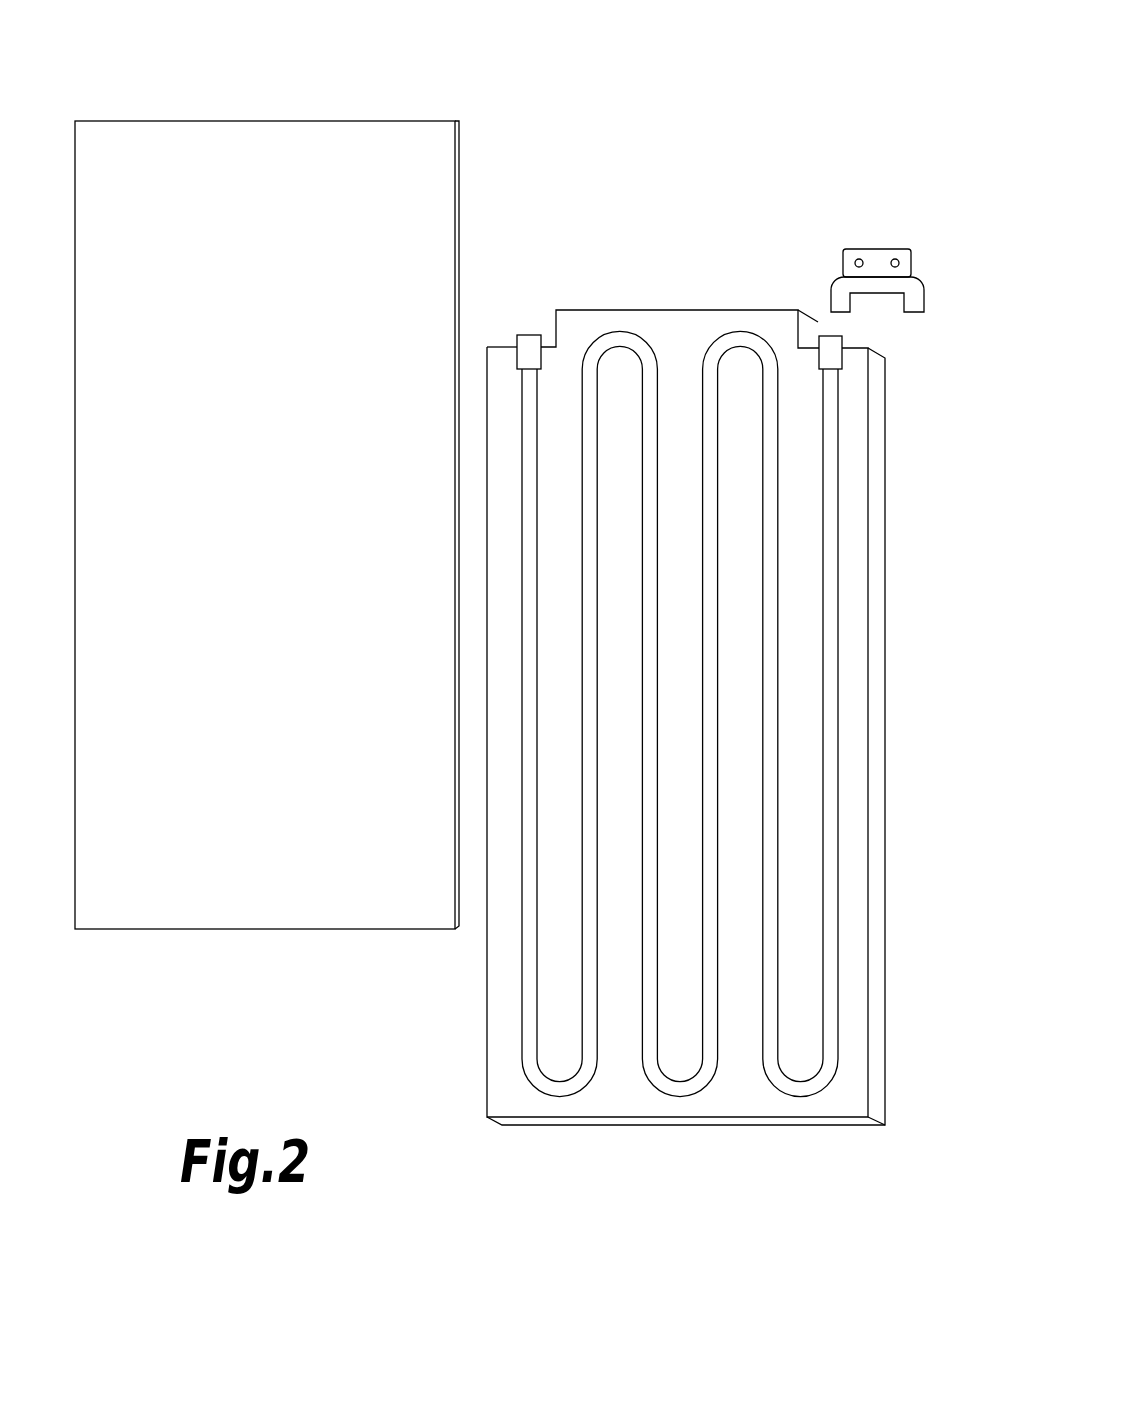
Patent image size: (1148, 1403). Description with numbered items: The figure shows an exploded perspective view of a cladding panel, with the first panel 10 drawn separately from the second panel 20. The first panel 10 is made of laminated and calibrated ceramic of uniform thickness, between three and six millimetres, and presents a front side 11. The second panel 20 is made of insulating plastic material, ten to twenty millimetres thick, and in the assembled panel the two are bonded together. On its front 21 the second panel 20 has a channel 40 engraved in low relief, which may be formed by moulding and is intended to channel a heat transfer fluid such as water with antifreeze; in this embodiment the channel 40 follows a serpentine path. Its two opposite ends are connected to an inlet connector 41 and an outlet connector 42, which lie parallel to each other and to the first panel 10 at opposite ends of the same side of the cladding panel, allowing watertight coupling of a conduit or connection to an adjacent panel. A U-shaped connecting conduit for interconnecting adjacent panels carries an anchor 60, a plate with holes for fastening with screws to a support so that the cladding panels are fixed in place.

The first panel 10 is at (213, 121).
The front side 11 is at (287, 147).
The second panel 20 is at (602, 310).
The front 21 is at (677, 337).
The channel 40 is at (742, 340).
The inlet connector 41 is at (527, 335).
The outlet connector 42 is at (828, 336).
The anchor 60 is at (877, 249).